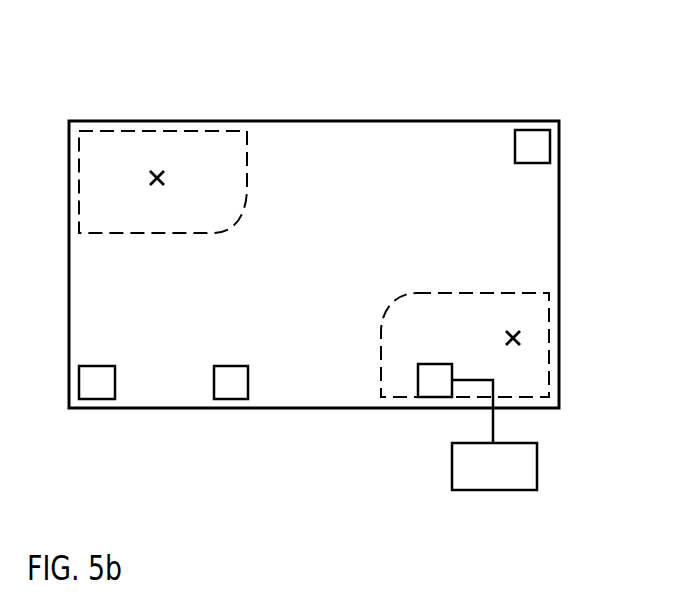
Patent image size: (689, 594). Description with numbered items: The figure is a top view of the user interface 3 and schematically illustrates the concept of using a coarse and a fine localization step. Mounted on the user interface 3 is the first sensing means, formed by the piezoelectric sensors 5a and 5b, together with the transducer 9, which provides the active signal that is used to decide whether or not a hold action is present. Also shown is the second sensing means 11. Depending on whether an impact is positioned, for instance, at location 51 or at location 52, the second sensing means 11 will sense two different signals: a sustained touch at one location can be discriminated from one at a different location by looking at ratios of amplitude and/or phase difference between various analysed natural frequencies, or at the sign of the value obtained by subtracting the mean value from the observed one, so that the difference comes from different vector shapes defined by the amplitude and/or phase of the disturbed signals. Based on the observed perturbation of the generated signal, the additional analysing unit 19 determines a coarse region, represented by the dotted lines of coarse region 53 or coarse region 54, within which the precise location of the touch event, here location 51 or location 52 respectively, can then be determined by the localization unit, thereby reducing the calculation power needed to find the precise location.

The user interface 3 is at (92, 207).
The piezoelectric sensor 5a is at (97, 399).
The piezoelectric sensor 5b is at (531, 130).
The transducer 9 is at (230, 399).
The second sensing means 11 is at (433, 398).
The analysing unit 19 is at (517, 490).
The location 51 is at (147, 173).
The location 52 is at (520, 333).
The coarse region 53 is at (247, 178).
The coarse region 54 is at (381, 367).